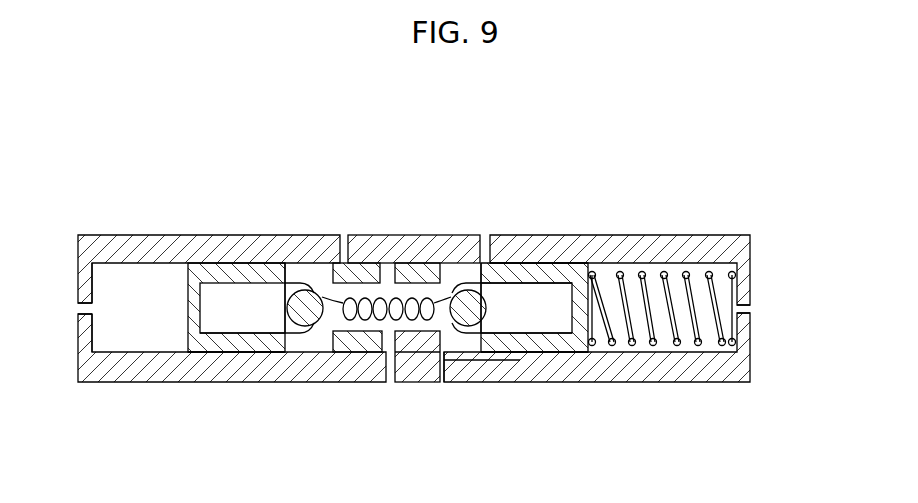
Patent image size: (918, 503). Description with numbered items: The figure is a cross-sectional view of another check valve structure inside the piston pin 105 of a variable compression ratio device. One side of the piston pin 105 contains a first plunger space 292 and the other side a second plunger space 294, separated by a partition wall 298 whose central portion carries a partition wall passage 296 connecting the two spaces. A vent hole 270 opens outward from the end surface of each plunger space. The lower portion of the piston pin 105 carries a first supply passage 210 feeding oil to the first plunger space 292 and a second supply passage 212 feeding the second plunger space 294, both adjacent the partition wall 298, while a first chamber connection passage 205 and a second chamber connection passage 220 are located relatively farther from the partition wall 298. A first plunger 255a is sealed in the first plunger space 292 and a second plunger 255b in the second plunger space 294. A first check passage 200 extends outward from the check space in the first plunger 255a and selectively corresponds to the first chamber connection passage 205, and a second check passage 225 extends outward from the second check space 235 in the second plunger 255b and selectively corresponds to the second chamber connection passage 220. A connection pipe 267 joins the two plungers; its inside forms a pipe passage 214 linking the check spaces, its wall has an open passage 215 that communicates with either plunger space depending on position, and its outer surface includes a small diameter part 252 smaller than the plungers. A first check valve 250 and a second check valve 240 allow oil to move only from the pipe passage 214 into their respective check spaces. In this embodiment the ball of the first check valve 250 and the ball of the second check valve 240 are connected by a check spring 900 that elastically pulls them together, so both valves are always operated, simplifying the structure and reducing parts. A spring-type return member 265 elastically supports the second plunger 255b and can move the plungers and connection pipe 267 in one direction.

The piston pin 105 is at (129, 250).
The second check space 235 is at (522, 262).
The return member 265 is at (700, 366).
The second supply passage 212 is at (452, 366).
The vent hole 270 is at (80, 308).
The first plunger space 292 is at (138, 347).
The first chamber connection passage 205 is at (342, 262).
The small diameter part 252 is at (360, 275).
The partition wall passage 296 is at (428, 262).
The connection pipe 267 is at (350, 336).
The first supply passage 210 is at (415, 336).
The partition wall 298 is at (432, 362).
The first check passage 200 is at (288, 270).
The pipe passage 214 is at (288, 262).
The first plunger 255a is at (217, 343).
The first check valve 250 is at (300, 324).
The second chamber connection passage 220 is at (484, 268).
The second check passage 225 is at (455, 280).
The second plunger 255b is at (562, 273).
The second check valve 240 is at (525, 358).
The check spring 900 is at (472, 320).
The open passage 215 is at (387, 325).
The second plunger space 294 is at (636, 352).